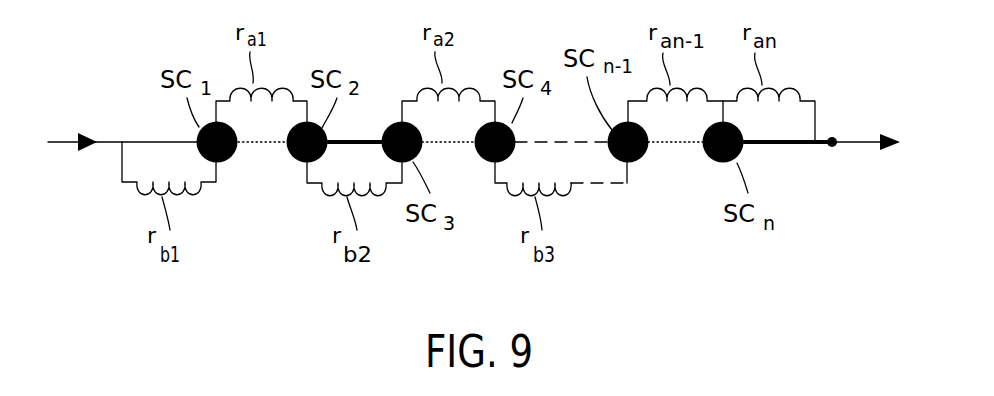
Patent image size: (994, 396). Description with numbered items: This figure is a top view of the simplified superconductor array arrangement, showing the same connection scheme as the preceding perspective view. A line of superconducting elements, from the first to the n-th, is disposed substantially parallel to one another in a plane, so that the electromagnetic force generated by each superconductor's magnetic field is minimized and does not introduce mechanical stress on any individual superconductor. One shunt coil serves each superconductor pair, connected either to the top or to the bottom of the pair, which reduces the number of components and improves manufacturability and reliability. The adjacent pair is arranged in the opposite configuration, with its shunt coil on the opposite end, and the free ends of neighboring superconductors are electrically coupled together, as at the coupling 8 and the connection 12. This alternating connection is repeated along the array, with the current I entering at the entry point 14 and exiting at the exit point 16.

The conductive shunt link between superconducting elements 8 is at (363, 140).
The series connection conductor 12 is at (466, 143).
The current entry point 14 is at (65, 142).
The current exit point 16 is at (865, 148).